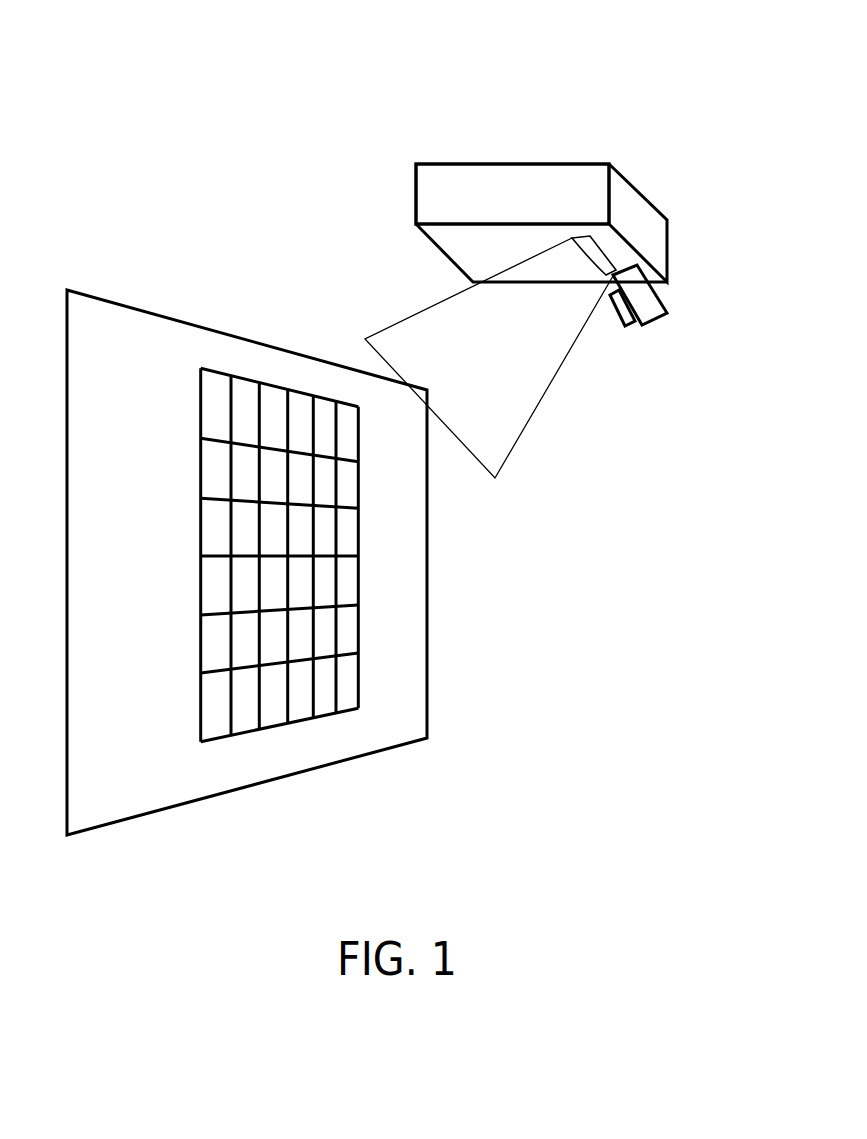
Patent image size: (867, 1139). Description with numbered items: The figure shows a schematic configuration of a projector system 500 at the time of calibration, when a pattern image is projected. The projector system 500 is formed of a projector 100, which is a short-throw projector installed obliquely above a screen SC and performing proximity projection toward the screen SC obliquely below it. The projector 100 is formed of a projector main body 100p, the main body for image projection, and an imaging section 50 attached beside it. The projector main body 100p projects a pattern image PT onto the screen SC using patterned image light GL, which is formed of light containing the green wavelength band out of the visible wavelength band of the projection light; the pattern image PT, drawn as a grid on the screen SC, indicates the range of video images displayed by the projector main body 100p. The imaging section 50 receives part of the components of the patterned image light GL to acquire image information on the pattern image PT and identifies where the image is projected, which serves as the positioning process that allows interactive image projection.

The projector system 500 is at (424, 82).
The projector 100 is at (515, 150).
The projector main body 100p is at (580, 177).
The imaging section 50 is at (653, 300).
The patterned image light GL is at (542, 393).
The screen SC is at (165, 332).
The pattern image PT is at (340, 693).